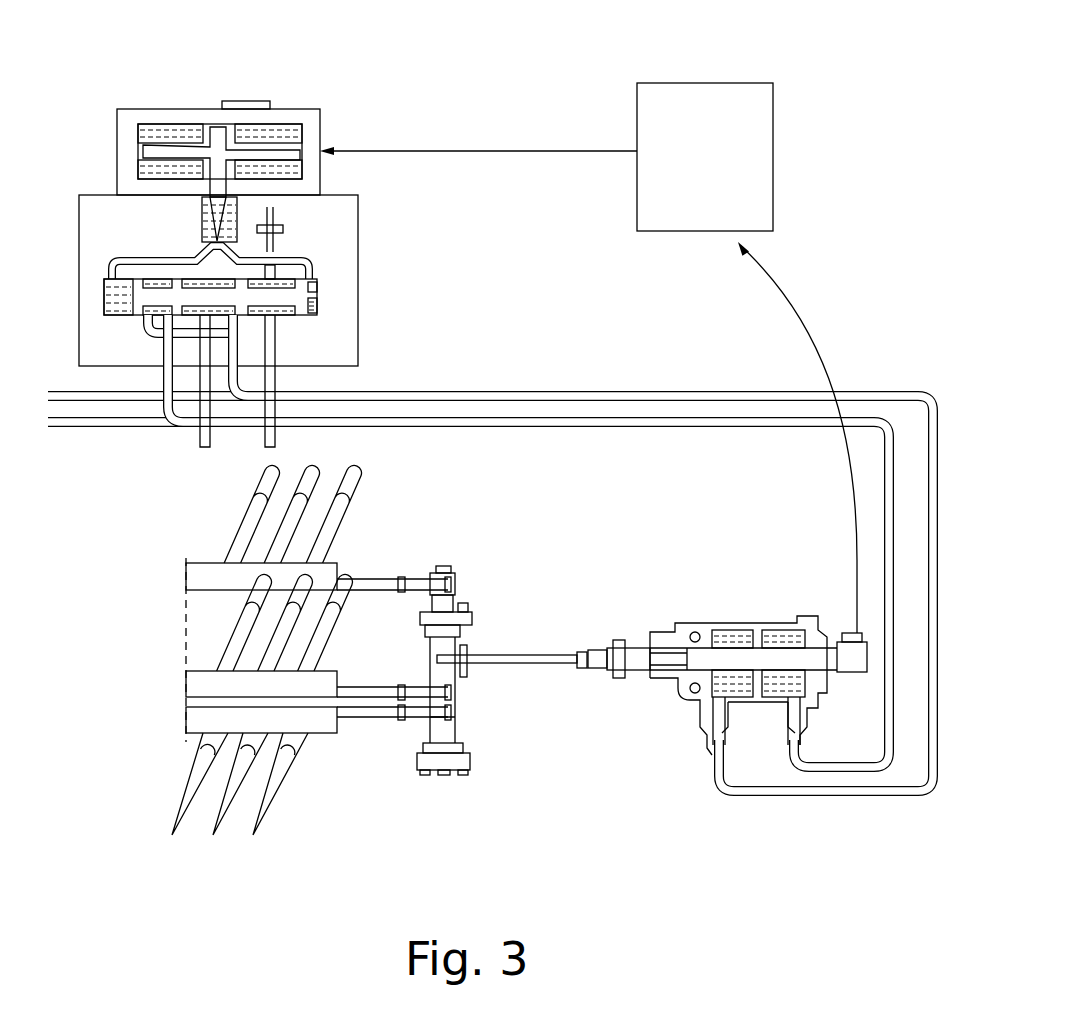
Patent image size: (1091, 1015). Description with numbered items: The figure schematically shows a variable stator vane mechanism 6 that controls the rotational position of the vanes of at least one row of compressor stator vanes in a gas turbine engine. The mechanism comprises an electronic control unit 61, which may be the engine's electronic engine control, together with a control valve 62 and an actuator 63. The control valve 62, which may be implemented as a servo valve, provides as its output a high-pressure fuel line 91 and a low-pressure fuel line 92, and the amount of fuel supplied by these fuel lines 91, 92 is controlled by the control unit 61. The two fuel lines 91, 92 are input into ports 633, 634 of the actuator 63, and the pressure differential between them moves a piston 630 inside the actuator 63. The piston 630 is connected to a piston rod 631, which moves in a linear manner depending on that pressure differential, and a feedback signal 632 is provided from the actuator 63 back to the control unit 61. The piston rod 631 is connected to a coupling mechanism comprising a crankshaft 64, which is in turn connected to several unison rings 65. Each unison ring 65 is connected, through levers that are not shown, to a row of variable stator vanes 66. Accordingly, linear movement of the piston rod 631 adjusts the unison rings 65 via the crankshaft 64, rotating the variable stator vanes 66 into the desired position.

The variable stator vane mechanism 6 is at (320, 840).
The electronic control unit 61 is at (706, 82).
The control valve 62 is at (304, 108).
The actuator 63 is at (698, 623).
The piston 630 is at (733, 658).
The piston rod 631 is at (560, 668).
The feedback signal 632 is at (797, 307).
The port 633 is at (722, 730).
The port 634 is at (803, 732).
The crankshaft 64 is at (450, 731).
The unison ring 65 is at (391, 578).
The variable stator vane 66 is at (250, 511).
The high-pressure fuel line 91 is at (567, 427).
The low-pressure fuel line 92 is at (640, 398).